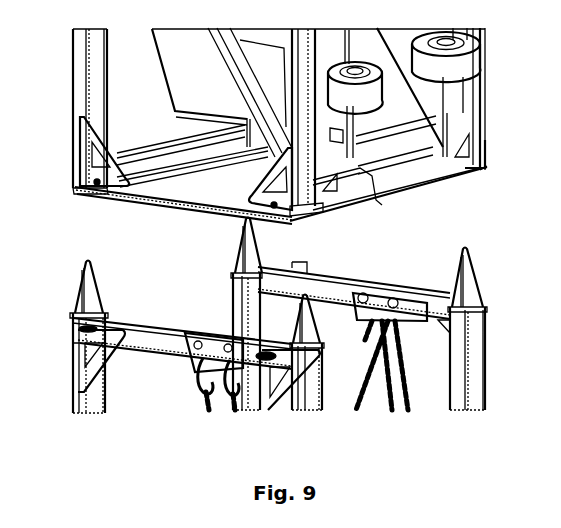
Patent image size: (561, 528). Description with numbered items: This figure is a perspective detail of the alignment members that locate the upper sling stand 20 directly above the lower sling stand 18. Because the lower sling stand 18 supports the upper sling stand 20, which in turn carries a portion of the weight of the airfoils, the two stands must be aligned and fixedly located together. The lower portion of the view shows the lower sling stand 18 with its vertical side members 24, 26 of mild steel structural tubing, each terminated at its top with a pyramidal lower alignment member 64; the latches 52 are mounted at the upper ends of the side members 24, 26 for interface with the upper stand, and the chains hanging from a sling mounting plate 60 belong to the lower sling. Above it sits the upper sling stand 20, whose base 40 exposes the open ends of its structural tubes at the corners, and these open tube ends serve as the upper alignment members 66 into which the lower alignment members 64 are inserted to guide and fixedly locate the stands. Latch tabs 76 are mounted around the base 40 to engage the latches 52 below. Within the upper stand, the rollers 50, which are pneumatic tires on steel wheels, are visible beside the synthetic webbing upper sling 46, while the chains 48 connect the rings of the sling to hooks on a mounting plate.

The lower sling stand 18 is at (93, 413).
The upper sling stand 20 is at (73, 105).
The side member 24 is at (72, 385).
The side member 26 is at (484, 377).
The base 40 is at (380, 198).
The upper sling 46 is at (170, 96).
The chains 48 is at (390, 411).
The rollers 50 is at (425, 80).
The latches 52 is at (84, 330).
The sling mounting plate 60 is at (198, 372).
The lower alignment members 64 is at (238, 247).
The upper alignment members 66 is at (82, 188).
The latch tabs 76 is at (272, 205).